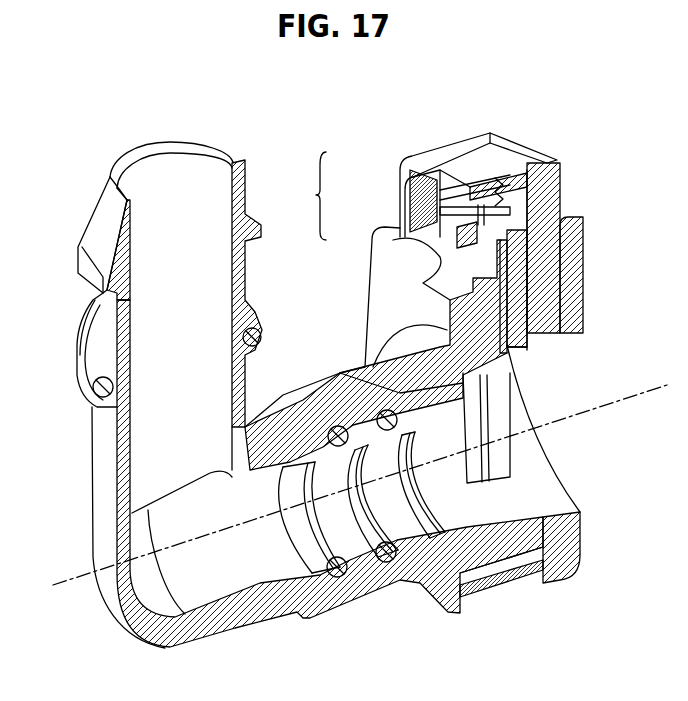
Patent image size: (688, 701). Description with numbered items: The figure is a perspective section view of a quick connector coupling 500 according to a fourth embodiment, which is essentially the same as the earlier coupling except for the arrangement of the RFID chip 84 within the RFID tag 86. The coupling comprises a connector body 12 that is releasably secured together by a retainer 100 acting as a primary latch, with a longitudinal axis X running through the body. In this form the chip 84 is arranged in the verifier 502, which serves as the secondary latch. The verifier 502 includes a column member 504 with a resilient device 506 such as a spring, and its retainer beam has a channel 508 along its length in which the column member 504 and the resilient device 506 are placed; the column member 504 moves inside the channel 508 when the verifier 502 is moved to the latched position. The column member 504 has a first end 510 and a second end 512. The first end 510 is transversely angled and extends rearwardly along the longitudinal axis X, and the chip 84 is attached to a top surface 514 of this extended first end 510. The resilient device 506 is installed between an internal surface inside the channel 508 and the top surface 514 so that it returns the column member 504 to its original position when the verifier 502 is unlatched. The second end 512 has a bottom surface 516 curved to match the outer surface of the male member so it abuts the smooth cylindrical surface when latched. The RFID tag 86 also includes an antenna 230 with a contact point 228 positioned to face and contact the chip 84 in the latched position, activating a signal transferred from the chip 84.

The connector body 12 is at (333, 607).
The retainer 100 is at (497, 590).
The quick connector coupling 500 is at (457, 212).
The verifier 502 is at (512, 157).
The column member 504 is at (530, 273).
The resilient device 506 is at (523, 193).
The channel 508 is at (537, 167).
The first end 510 is at (560, 233).
The second end 512 is at (525, 337).
The top surface 514 is at (487, 213).
The bottom surface 516 is at (516, 356).
The contact point 228 is at (412, 190).
The antenna 230 is at (410, 205).
The RFID chip 84 is at (460, 215).
The RFID tag 86 is at (317, 195).
The longitudinal axis X is at (95, 576).